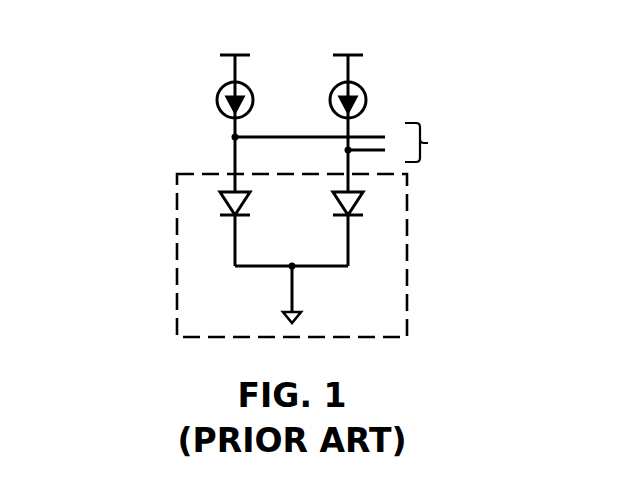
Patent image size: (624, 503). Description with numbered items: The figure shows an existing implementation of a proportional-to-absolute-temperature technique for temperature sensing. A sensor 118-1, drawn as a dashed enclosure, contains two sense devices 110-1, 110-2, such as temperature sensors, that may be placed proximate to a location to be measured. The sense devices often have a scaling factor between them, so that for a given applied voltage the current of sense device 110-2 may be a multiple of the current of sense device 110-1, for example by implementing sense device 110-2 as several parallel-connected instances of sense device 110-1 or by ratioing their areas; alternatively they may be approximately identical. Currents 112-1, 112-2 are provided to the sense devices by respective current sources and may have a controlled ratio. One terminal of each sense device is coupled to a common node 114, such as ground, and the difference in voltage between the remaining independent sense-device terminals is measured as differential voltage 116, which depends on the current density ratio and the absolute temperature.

The current 112-1 is at (220, 92).
The current 112-2 is at (364, 92).
The differential voltage 116 is at (453, 141).
The sense device 110-1 is at (227, 200).
The sense device 110-2 is at (357, 203).
The common node 114 is at (292, 266).
The sensor 118-1 is at (175, 312).